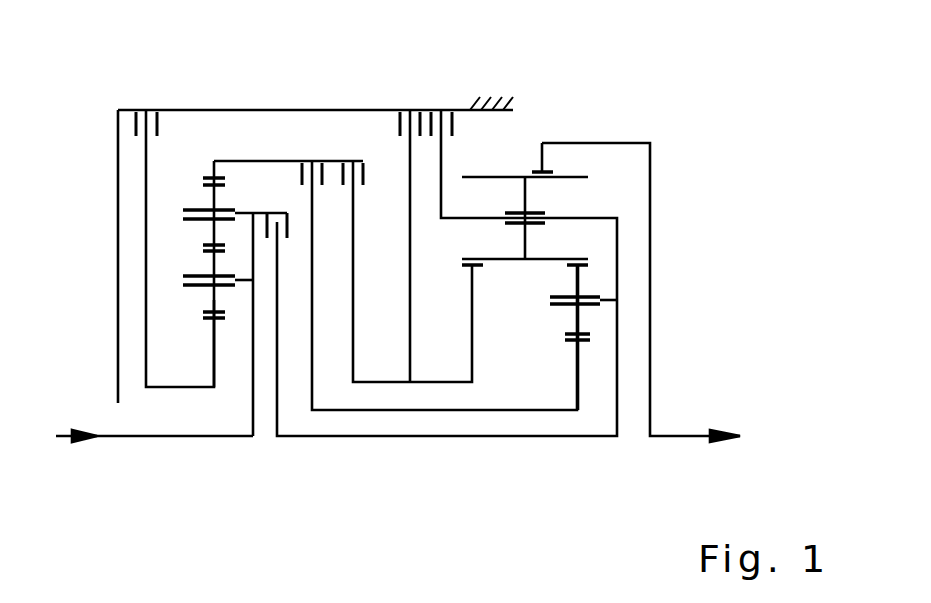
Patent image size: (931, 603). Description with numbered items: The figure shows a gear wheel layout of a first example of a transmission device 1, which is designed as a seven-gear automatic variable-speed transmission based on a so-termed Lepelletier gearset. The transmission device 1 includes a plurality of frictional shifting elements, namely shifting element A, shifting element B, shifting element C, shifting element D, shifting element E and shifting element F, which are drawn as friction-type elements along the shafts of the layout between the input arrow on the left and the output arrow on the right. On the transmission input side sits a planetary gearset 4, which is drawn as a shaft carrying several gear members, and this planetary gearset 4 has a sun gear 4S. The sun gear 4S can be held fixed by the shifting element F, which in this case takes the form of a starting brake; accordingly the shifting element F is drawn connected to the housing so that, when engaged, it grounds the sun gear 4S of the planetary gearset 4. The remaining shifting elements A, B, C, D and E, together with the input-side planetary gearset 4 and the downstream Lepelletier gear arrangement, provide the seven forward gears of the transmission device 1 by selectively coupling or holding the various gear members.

The transmission device 1 is at (600, 110).
The planetary gearset 4 is at (193, 298).
The sun gear 4S is at (215, 342).
The shifting element A is at (312, 160).
The shifting element B is at (354, 160).
The shifting element C is at (410, 110).
The shifting element D is at (442, 110).
The shifting element E is at (273, 220).
The shifting element F is at (147, 110).